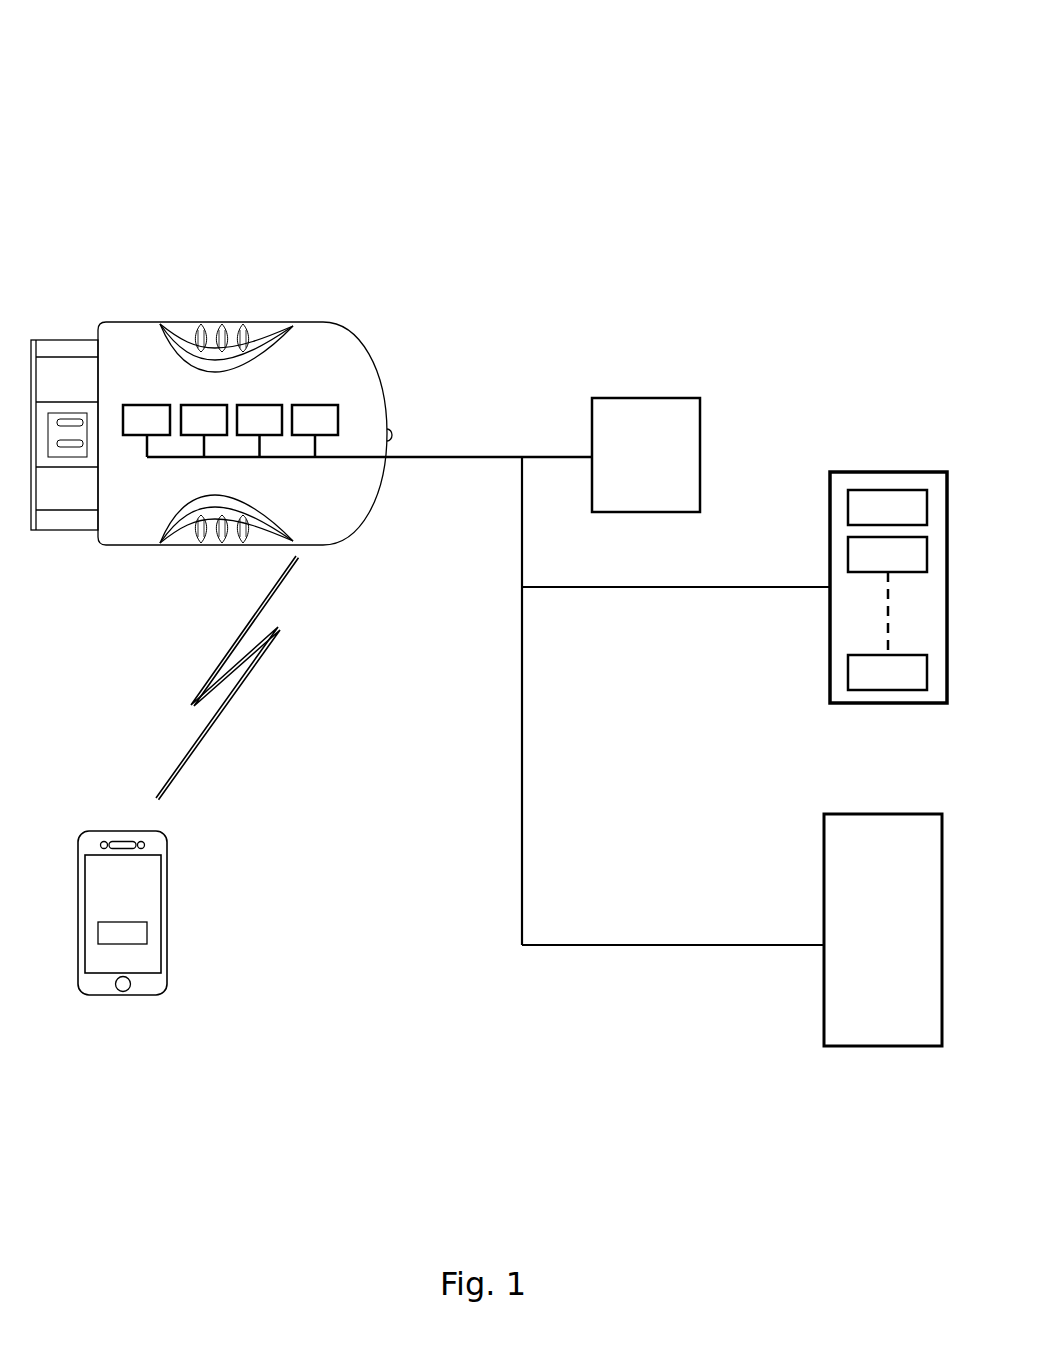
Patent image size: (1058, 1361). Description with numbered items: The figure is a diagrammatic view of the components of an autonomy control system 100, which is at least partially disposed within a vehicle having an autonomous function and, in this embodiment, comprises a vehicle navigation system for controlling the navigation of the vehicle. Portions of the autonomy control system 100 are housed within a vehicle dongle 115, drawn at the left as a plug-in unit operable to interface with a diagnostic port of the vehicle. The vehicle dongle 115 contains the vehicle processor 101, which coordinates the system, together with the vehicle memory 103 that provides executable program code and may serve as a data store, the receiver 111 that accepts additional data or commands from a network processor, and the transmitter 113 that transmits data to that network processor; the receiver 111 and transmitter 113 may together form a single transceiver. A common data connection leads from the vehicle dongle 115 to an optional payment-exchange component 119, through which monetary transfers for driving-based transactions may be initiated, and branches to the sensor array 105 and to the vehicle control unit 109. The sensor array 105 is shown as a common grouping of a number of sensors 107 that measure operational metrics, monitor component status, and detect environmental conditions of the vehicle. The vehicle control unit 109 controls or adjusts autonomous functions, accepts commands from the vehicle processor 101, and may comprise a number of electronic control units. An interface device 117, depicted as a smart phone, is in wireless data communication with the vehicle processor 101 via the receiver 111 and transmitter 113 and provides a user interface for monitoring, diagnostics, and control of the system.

The autonomy control system 100 is at (172, 82).
The vehicle dongle 115 is at (125, 320).
The vehicle processor 101 is at (131, 430).
The vehicle memory 103 is at (188, 430).
The receiver 111 is at (244, 430).
The transmitter 113 is at (299, 430).
The payment-exchange component 119 is at (628, 467).
The sensor array 105 is at (884, 470).
The sensors 107 is at (872, 517).
The vehicle control unit 109 is at (864, 955).
The interface device 117 is at (110, 828).